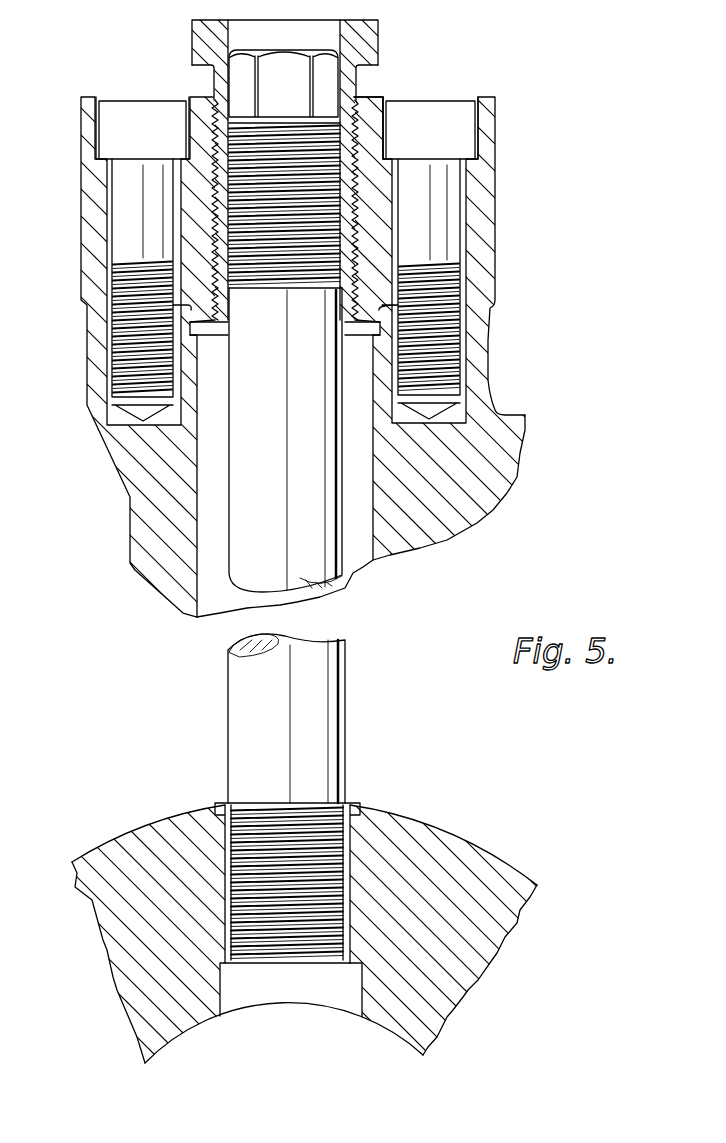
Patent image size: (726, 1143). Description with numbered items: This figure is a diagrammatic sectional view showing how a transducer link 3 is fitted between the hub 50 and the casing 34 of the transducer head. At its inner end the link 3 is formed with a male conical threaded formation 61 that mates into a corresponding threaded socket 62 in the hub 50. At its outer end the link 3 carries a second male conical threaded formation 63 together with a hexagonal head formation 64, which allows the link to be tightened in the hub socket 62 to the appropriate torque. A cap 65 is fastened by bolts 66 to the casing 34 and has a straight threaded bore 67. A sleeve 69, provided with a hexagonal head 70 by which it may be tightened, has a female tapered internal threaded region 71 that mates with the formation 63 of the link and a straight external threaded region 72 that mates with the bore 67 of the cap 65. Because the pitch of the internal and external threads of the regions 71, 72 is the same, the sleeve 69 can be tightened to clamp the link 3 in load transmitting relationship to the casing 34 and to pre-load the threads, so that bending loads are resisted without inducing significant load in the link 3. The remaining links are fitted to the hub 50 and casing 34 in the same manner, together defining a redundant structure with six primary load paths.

The link 3 is at (322, 546).
The casing 34 is at (487, 430).
The hub 50 is at (447, 857).
The male conical threaded formation 61 is at (305, 822).
The threaded socket 62 is at (355, 847).
The second male conical threaded formation 63 is at (268, 250).
The hexagonal head formation 64 is at (300, 97).
The cap 65 is at (482, 212).
The bolts 66 is at (120, 210).
The straight threaded bore 67 is at (345, 242).
The sleeve 69 is at (355, 83).
The hexagonal head 70 is at (365, 45).
The female tapered internal threaded region 71 is at (358, 128).
The straight external threaded region 72 is at (362, 148).